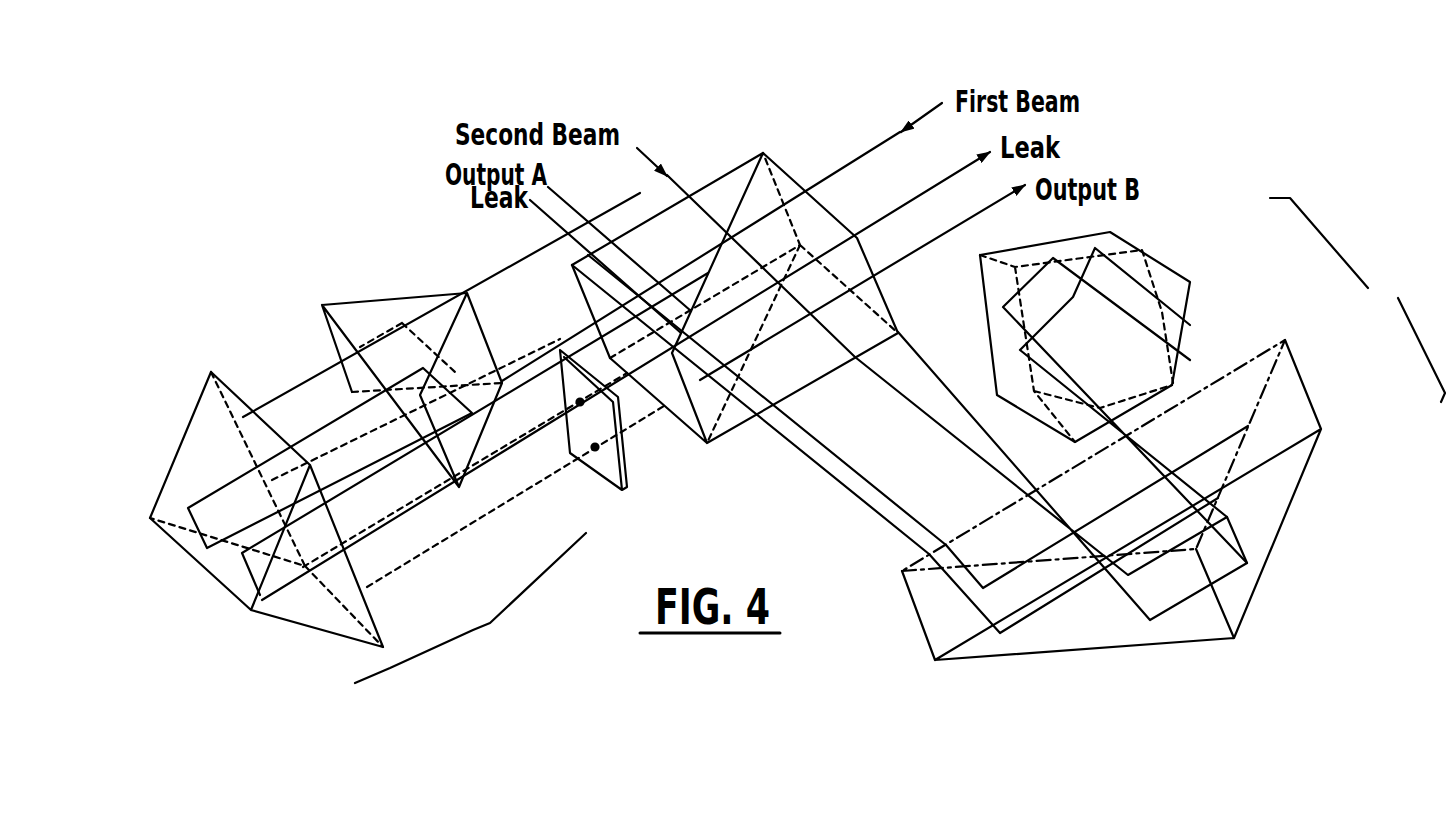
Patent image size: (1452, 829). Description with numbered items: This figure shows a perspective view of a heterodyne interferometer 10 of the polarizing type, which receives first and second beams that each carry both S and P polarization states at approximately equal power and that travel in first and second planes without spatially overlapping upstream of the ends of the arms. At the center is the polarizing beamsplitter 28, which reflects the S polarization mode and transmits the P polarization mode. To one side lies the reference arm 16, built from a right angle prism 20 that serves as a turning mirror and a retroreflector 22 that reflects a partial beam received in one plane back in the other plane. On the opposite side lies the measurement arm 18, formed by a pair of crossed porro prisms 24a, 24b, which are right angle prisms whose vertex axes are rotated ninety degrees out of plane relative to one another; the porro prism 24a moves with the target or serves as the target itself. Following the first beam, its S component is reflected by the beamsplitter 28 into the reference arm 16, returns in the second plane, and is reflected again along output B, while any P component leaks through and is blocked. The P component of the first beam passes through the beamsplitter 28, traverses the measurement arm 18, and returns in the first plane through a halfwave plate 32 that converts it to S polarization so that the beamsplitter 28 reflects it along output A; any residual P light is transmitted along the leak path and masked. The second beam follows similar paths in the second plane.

The heterodyne interferometer 10 is at (1275, 105).
The reference arm 16 is at (1357, 300).
The measurement arm 18 is at (470, 608).
The right angle prism 20 is at (1176, 630).
The retroreflector 22 is at (1145, 249).
The porro prism 24a is at (237, 580).
The porro prism 24b is at (388, 308).
The polarizing beamsplitter 28 is at (746, 170).
The halfwave plate 32 is at (627, 487).